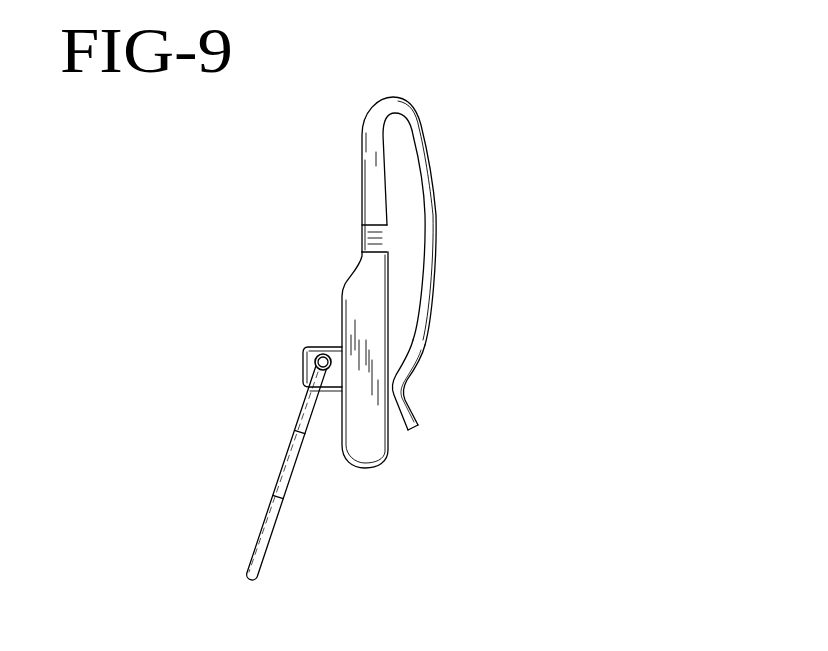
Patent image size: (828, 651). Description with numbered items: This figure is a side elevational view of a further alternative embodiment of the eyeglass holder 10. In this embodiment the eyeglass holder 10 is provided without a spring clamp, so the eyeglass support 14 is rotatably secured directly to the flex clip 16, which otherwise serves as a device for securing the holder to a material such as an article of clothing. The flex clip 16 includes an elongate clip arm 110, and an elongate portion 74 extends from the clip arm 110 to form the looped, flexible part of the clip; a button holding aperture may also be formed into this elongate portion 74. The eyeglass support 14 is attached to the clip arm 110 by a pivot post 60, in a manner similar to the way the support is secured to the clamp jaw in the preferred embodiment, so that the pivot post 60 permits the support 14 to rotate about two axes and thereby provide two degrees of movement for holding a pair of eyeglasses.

The eyeglass holder 10 is at (645, 151).
The flex clip 16 is at (424, 131).
The elongate portion 74 is at (433, 252).
The clip arm 110 is at (358, 278).
The pivot post 60 is at (305, 347).
The eyeglass support 14 is at (258, 540).